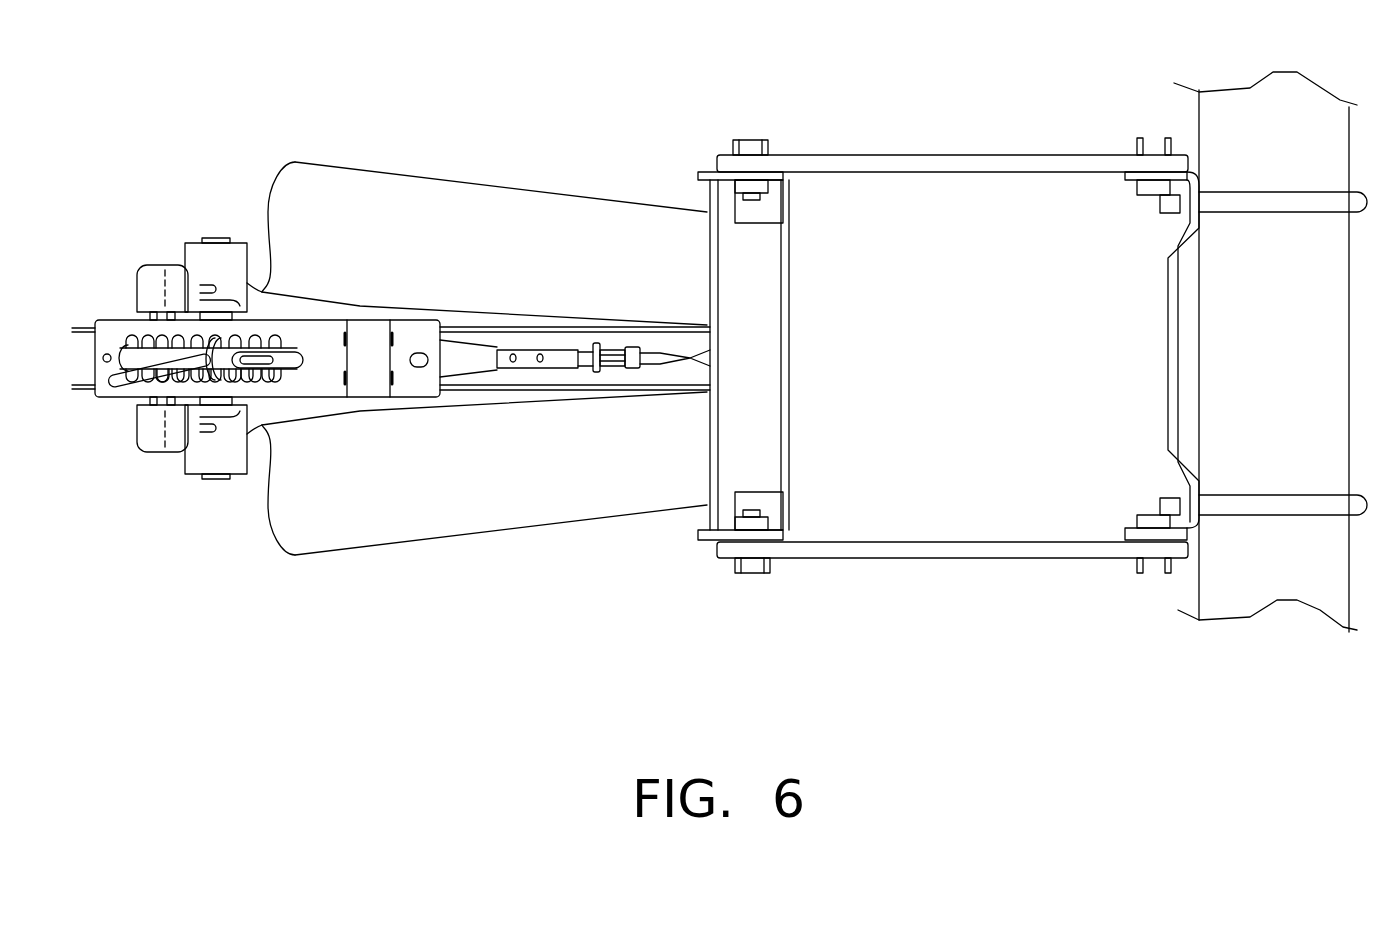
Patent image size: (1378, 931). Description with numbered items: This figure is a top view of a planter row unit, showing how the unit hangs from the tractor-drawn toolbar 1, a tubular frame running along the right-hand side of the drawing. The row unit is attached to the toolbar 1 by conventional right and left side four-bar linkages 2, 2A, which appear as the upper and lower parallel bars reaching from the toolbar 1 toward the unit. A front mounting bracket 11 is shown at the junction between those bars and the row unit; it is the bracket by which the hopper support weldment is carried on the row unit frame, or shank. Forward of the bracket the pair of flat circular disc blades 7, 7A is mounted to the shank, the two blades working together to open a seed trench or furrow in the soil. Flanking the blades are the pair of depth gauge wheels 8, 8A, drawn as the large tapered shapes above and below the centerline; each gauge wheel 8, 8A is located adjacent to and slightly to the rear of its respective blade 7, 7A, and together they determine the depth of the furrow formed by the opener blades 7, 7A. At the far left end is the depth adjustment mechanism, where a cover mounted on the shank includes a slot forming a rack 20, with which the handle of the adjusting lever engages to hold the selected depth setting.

The toolbar 1 is at (1233, 567).
The four-bar linkage 2 is at (940, 571).
The four-bar linkage 2A is at (969, 136).
The disc blade 7 is at (503, 395).
The disc blade 7A is at (540, 345).
The depth gauge wheel 8 is at (405, 523).
The depth gauge wheel 8A is at (502, 207).
The front mounting bracket 11 is at (792, 352).
The rack 20 is at (287, 342).